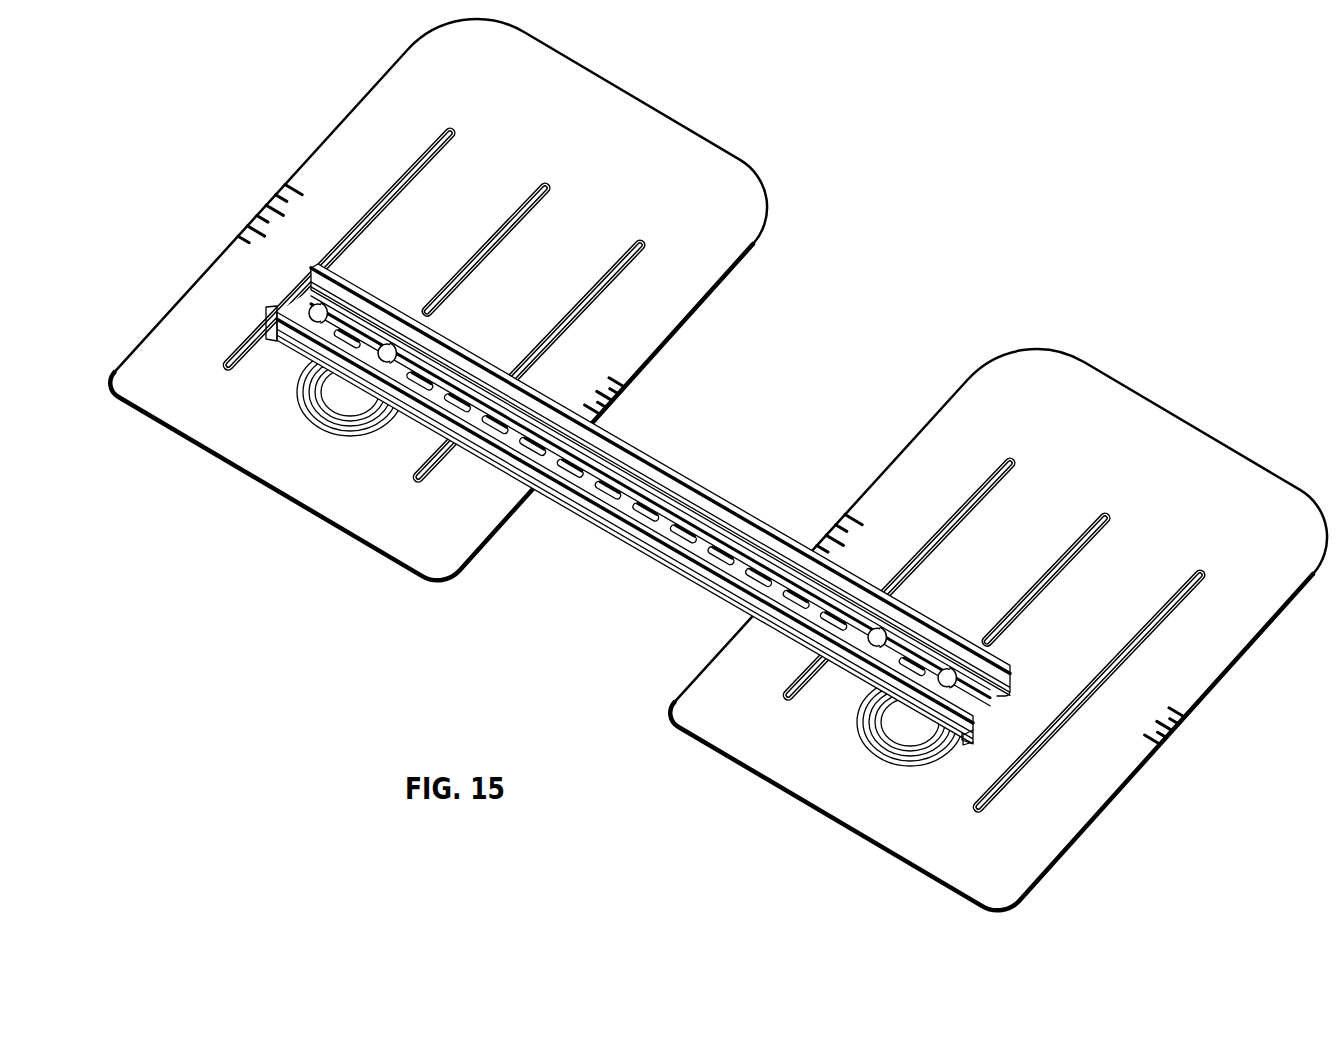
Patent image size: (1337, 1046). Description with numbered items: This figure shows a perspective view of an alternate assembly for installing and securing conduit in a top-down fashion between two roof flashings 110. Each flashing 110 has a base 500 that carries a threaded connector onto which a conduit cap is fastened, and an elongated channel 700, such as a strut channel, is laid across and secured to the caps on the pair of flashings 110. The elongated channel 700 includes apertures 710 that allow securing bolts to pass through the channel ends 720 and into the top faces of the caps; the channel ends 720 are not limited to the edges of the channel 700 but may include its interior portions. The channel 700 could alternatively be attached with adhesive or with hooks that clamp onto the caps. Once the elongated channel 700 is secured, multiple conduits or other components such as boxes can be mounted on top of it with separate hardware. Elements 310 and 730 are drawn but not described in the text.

The flashing 110 is at (622, 101).
The roller ball 310 is at (313, 378).
The base 500 is at (345, 416).
The elongated channel 700 is at (653, 548).
The apertures 710 is at (619, 488).
The channel ends 720 is at (266, 314).
The channel strip 730 is at (688, 524).